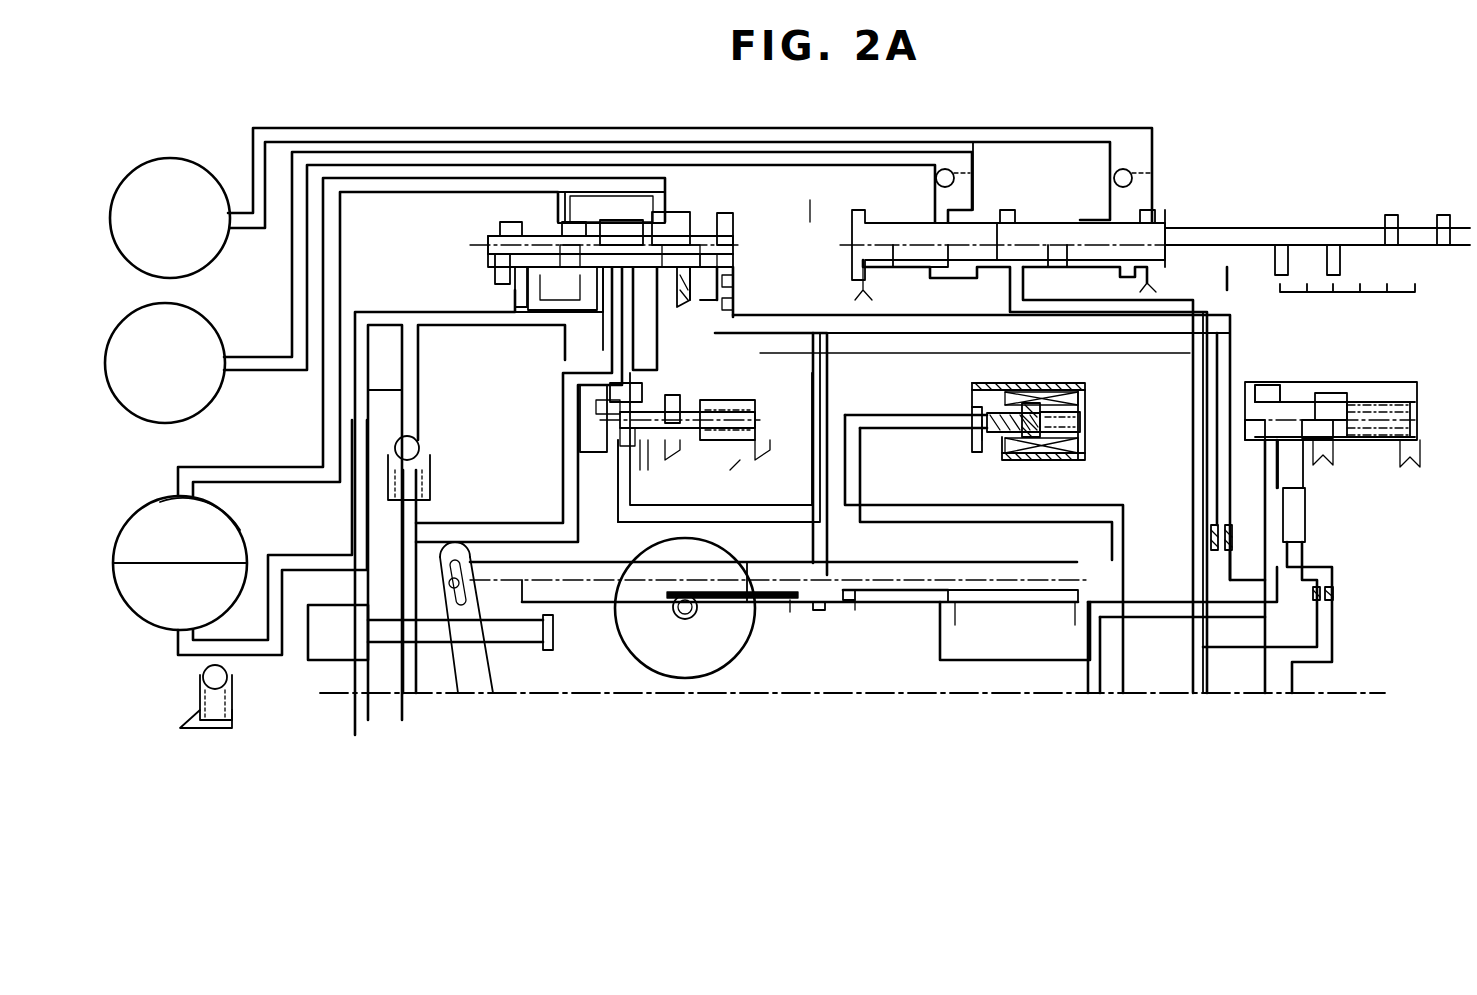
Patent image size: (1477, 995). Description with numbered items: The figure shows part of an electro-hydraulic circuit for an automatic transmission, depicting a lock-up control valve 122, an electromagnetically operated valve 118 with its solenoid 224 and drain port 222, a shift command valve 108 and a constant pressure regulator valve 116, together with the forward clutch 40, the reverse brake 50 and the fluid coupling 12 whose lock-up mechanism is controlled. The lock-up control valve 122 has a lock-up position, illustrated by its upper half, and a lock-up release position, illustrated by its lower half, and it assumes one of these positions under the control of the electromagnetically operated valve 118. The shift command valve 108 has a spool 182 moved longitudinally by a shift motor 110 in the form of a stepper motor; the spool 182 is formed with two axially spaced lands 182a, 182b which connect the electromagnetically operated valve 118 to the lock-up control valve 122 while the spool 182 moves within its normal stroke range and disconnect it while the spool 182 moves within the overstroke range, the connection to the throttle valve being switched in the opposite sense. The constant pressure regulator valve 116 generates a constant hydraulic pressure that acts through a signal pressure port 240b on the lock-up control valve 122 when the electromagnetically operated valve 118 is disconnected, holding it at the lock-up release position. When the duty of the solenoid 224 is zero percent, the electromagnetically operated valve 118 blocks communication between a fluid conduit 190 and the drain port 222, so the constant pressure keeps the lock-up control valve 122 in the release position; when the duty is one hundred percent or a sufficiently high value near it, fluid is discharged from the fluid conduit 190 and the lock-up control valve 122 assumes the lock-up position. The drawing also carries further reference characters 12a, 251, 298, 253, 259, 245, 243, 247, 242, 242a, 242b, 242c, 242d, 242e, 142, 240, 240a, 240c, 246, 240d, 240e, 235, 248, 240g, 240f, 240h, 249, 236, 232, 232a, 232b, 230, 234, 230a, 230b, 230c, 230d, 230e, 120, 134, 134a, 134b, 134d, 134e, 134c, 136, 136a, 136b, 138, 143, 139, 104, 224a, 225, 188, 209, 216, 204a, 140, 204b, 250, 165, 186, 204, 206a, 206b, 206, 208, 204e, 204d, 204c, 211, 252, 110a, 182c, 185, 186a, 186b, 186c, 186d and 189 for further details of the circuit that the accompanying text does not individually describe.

The reverse brake 50 is at (205, 178).
The forward clutch 40 is at (220, 322).
The fluid coupling 12 is at (152, 622).
The lock-up chamber 12a is at (238, 525).
The check valve 251 is at (232, 672).
The torque sensor block 298 is at (338, 605).
The check valve 253 is at (420, 448).
The passage 259 is at (520, 530).
The passage 245 is at (402, 392).
The passage 243 is at (340, 232).
The lock-up control valve 122 is at (485, 238).
The port 247 is at (565, 190).
The shift valve spool 242 is at (528, 258).
The land 242a is at (498, 235).
The land 242b is at (562, 232).
The land 242c is at (611, 218).
The land 242d is at (665, 195).
The land 242e is at (735, 228).
The passage 142 is at (810, 199).
The shift valve 240 is at (710, 228).
The port 240a is at (497, 270).
The signal pressure port 240b is at (515, 288).
The port 240c is at (562, 289).
The passage 246 is at (520, 305).
The port 240d is at (603, 293).
The port 240e is at (580, 365).
The orifice 235 is at (630, 295).
The passage 248 is at (687, 280).
The port 240g is at (693, 283).
The port 240f is at (725, 258).
The port 240h is at (735, 285).
The passage 249 is at (735, 304).
The spring 236 is at (610, 398).
The plunger 232 is at (580, 441).
The land 232a is at (596, 414).
The land 232b is at (683, 420).
The lock-up control valve 230 is at (755, 403).
The spring 234 is at (755, 425).
The port 230a is at (620, 440).
The port 230b is at (620, 465).
The port 230c is at (645, 470).
The port 230d is at (678, 452).
The port 230e is at (760, 450).
The passage 120 is at (738, 455).
The manual valve 134 is at (1205, 222).
The port 134a is at (885, 289).
The port 134b is at (972, 280).
The port 134d is at (1118, 280).
The port 134e is at (1172, 285).
The port 134c is at (1010, 305).
The manual valve spool 136 is at (1328, 228).
The land 136a is at (1030, 228).
The land 136b is at (1168, 228).
The passage 138 is at (1020, 182).
The orifice 143 is at (965, 185).
The orifice 139 is at (1135, 165).
The hydraulic control circuit 104 is at (1178, 185).
The solenoid 224 is at (1068, 395).
The plunger 224a is at (1028, 403).
The spring 225 is at (1082, 422).
The drain port 222 is at (993, 455).
The electromagnetically operated valve 118 is at (968, 407).
The passage 188 is at (838, 390).
The fluid conduit 190 is at (862, 470).
The passage 209 is at (1165, 345).
The land 216 is at (1250, 395).
The port 204a is at (1245, 437).
The passage 140 is at (1193, 475).
The port 204b is at (1265, 475).
The orifice 250 is at (1208, 540).
The passage 165 is at (957, 505).
The passage 186 is at (1010, 565).
The pressure regulator valve 204 is at (1380, 402).
The land 206a is at (1280, 392).
The land 206b is at (1330, 398).
The valve spool 206 is at (1400, 407).
The spring 208 is at (1410, 428).
The constant pressure regulator valve 116 is at (1345, 445).
The port 204e is at (1408, 448).
The port 204d is at (1325, 450).
The port 204c is at (1290, 450).
The plunger 211 is at (1303, 525).
The orifice 252 is at (1335, 598).
The shift motor 110 is at (635, 652).
The pump shaft 110a is at (690, 618).
The spool 182 is at (583, 598).
The land 182a is at (812, 608).
The passage 182c is at (787, 612).
The land 182b is at (990, 597).
The lever 185 is at (465, 583).
The passage 186a is at (832, 610).
The passage 186b is at (858, 612).
The shift command valve 108 is at (895, 605).
The passage 186c is at (955, 620).
The passage 186d is at (1075, 618).
The passage 189 is at (972, 660).